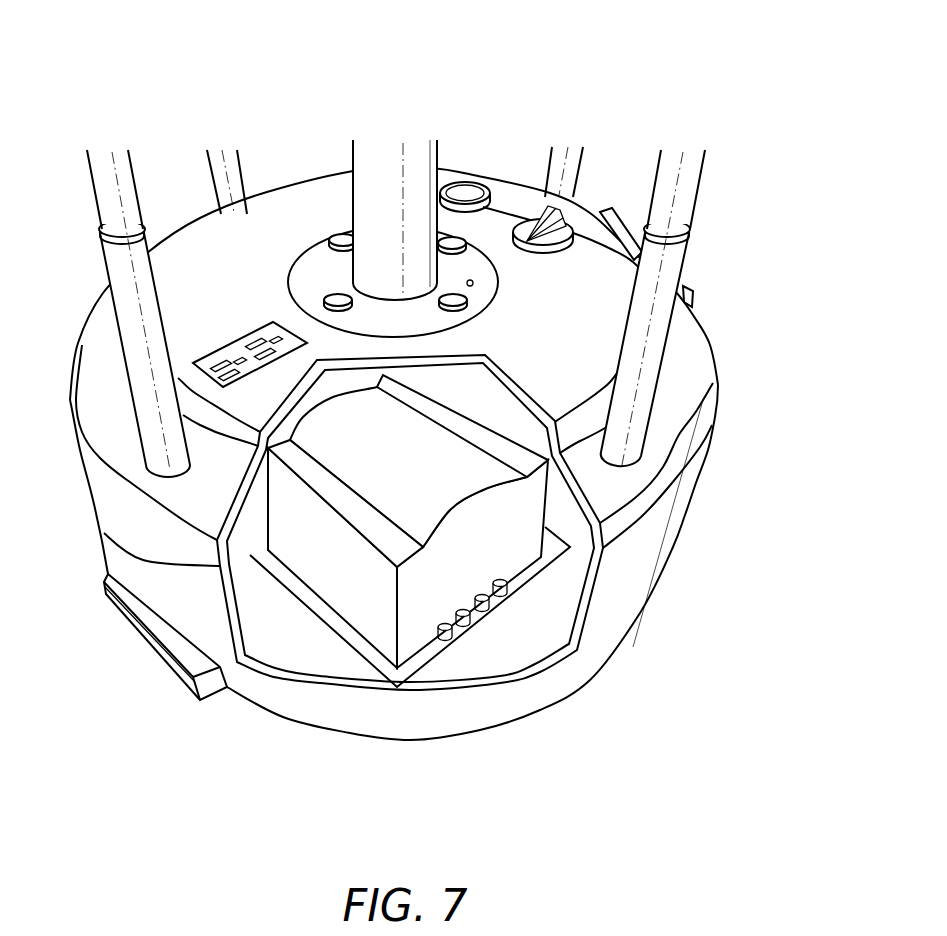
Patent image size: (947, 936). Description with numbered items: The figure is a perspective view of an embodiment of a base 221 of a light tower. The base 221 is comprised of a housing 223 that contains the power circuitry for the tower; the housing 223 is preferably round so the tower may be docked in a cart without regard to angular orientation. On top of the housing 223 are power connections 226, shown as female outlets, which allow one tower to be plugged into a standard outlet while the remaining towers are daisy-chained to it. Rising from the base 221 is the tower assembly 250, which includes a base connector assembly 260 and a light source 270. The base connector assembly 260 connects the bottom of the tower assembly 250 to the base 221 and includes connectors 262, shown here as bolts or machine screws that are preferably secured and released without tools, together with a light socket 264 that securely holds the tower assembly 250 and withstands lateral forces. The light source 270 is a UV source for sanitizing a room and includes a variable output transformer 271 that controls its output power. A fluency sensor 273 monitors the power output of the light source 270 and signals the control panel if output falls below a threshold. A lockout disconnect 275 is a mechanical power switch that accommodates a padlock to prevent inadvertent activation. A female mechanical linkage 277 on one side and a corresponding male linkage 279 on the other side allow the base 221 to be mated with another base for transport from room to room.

The base 221 is at (709, 293).
The housing 223 is at (713, 352).
The power connections 226 is at (250, 333).
The tower assembly 250 is at (437, 121).
The base connector assembly 260 is at (323, 270).
The connectors 262 is at (453, 238).
The light socket 264 is at (466, 283).
The light source 270 is at (377, 160).
The variable output transformer 271 is at (417, 651).
The fluency sensor 273 is at (457, 182).
The lockout disconnect 275 is at (567, 224).
The mechanical linkage 277 is at (118, 612).
The male linkage 279 is at (688, 277).